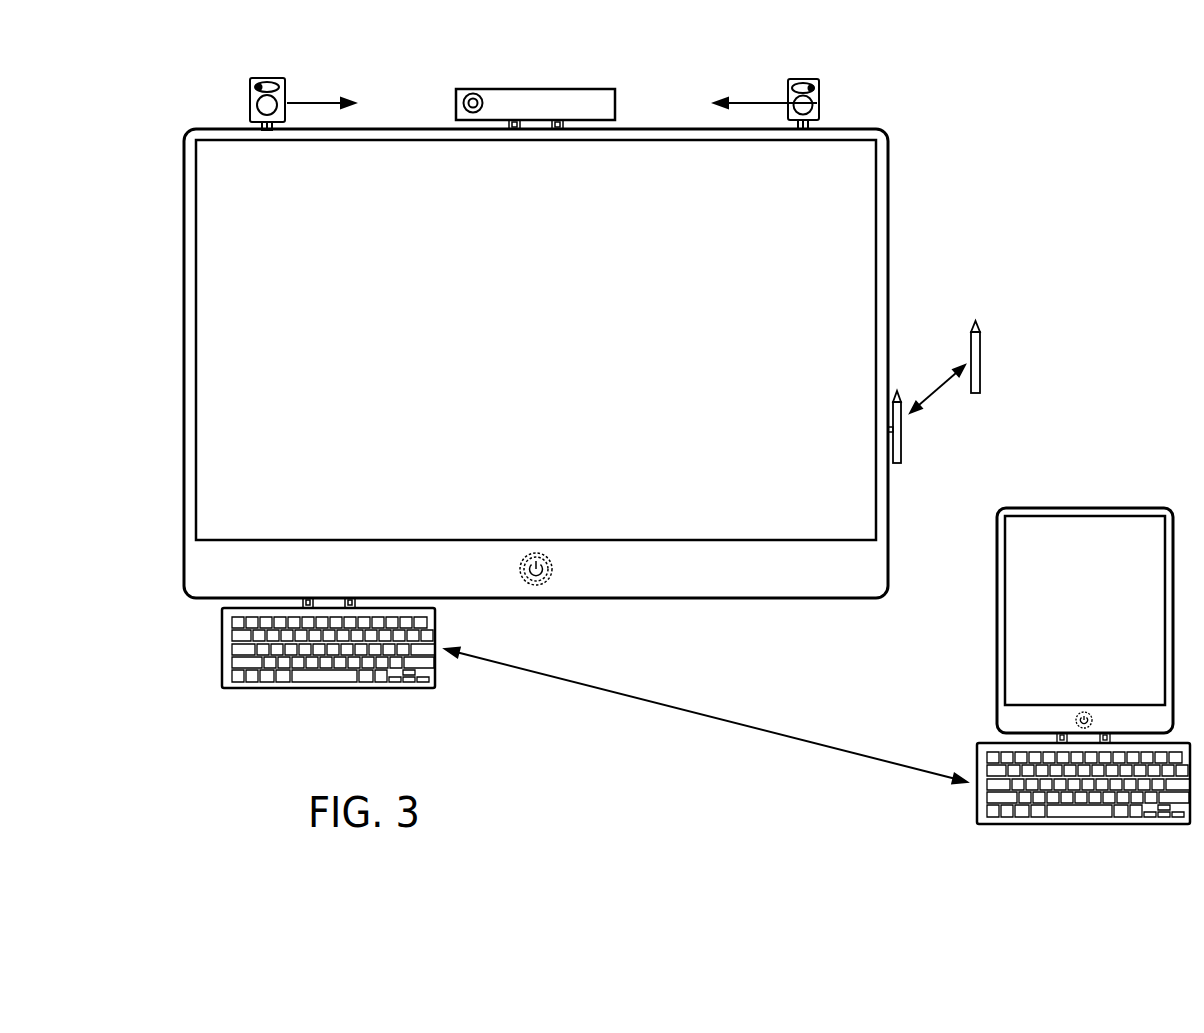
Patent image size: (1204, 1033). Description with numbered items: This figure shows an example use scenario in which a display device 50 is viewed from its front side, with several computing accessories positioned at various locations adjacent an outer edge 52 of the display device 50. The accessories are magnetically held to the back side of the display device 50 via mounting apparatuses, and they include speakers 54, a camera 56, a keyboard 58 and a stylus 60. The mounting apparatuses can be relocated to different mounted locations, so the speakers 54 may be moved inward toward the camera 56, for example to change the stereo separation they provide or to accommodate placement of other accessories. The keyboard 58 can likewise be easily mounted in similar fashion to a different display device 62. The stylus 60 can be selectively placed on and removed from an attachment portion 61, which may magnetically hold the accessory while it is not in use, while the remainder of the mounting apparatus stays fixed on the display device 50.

The display device 50 is at (523, 334).
The outer edge 52 is at (888, 212).
The speakers 54 is at (261, 78).
The camera 56 is at (562, 89).
The keyboard 58 is at (222, 660).
The stylus 60 is at (898, 441).
The attachment portion 61 is at (888, 428).
The different display device 62 is at (1071, 615).